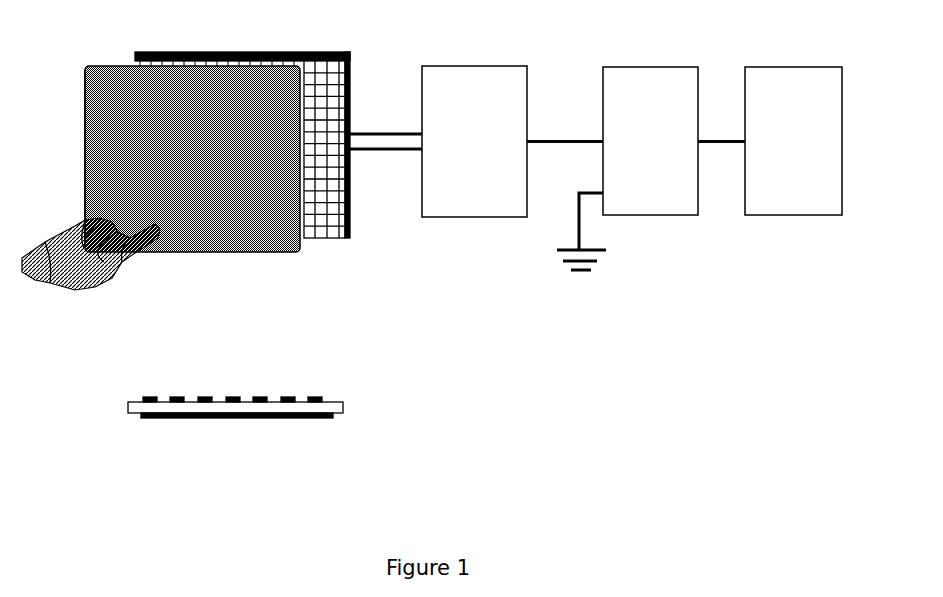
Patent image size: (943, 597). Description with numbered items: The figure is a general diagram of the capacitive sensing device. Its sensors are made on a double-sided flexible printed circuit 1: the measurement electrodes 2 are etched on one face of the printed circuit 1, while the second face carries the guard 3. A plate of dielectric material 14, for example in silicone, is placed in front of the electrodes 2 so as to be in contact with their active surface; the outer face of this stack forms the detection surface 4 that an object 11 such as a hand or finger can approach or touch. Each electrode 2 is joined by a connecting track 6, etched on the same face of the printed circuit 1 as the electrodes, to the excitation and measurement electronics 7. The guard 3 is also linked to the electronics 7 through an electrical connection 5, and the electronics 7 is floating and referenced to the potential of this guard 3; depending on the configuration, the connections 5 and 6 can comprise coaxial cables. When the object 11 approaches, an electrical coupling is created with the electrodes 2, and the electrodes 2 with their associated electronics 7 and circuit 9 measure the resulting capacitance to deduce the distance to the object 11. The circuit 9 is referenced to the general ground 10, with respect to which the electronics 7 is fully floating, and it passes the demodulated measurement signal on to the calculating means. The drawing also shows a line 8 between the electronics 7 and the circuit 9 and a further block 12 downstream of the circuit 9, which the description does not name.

The double-sided flexible printed circuit 1 is at (245, 51).
The measurement electrodes 2 is at (325, 51).
The guard 3 is at (268, 418).
The detection surface 4 is at (83, 165).
The electrical connection 5 is at (370, 133).
The connecting track 6 is at (400, 150).
The excitation and measurement electronics 7 is at (483, 66).
The signal line 8 is at (567, 141).
The circuit referenced to general ground 9 is at (675, 67).
The general ground 10 is at (573, 230).
The object 11 is at (43, 305).
The output unit 12 is at (777, 67).
The plate of dielectric material 14 is at (112, 65).